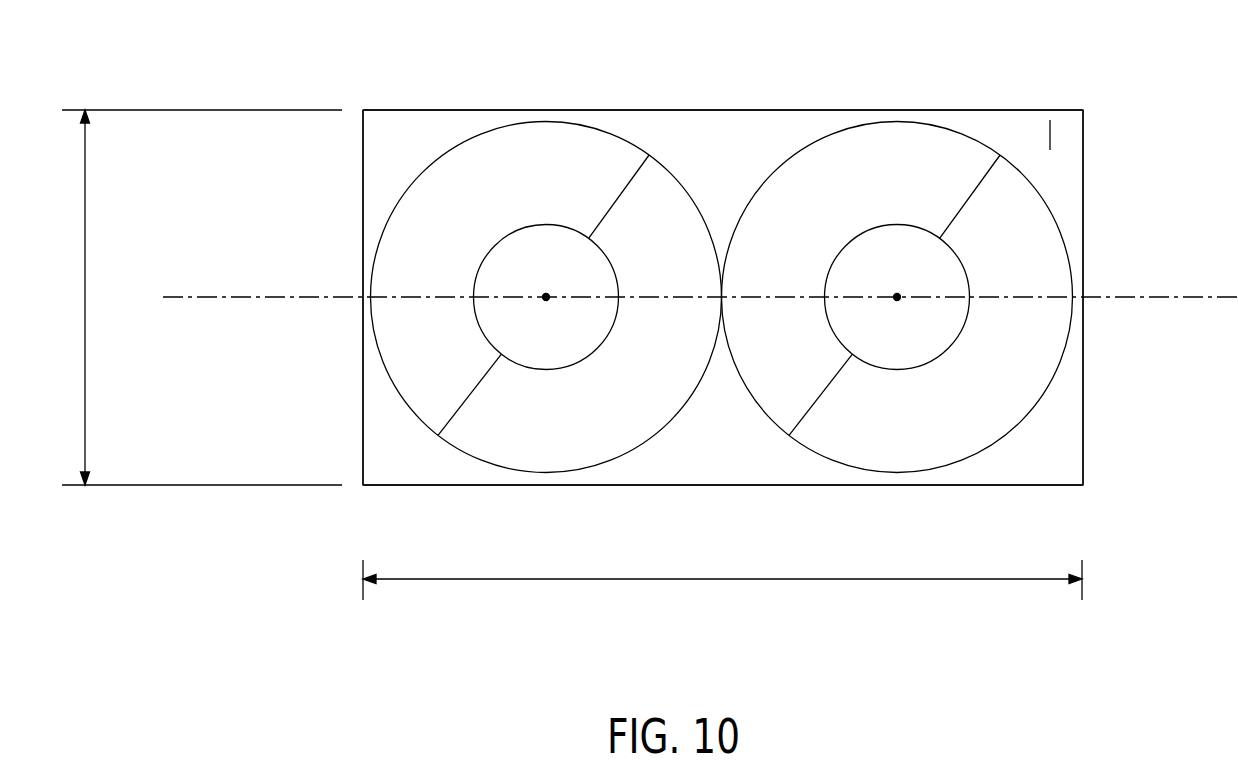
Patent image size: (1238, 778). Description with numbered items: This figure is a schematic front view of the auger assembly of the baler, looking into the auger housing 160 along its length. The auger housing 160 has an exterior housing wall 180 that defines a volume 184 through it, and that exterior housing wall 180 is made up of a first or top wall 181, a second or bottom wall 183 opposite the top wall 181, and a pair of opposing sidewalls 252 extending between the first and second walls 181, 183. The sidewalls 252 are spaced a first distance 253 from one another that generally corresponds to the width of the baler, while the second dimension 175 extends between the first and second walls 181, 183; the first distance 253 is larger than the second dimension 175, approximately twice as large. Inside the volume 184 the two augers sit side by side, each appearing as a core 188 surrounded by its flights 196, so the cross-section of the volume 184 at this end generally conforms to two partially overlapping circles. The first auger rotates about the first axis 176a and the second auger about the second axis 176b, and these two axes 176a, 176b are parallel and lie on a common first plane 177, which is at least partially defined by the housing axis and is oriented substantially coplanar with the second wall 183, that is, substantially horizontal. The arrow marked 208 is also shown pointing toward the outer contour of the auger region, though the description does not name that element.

The auger housing 160 is at (983, 110).
The second dimension 175 is at (87, 365).
The first axis 176a is at (897, 297).
The second axis 176b is at (546, 297).
The first plane 177 is at (1182, 295).
The exterior housing wall 180 is at (723, 110).
The first wall 181 is at (490, 110).
The second wall 183 is at (708, 485).
The volume 184 is at (1057, 134).
The core 188 is at (527, 224).
The flights 196 is at (453, 190).
The fan shroud 208 is at (671, 165).
The sidewalls 252 is at (362, 392).
The first distance 253 is at (745, 580).